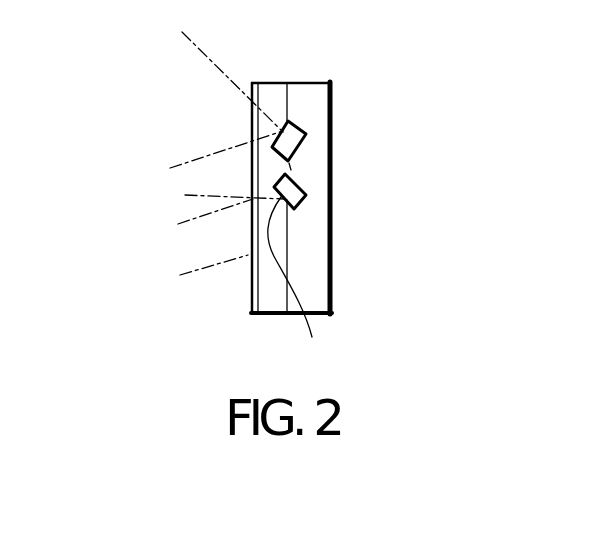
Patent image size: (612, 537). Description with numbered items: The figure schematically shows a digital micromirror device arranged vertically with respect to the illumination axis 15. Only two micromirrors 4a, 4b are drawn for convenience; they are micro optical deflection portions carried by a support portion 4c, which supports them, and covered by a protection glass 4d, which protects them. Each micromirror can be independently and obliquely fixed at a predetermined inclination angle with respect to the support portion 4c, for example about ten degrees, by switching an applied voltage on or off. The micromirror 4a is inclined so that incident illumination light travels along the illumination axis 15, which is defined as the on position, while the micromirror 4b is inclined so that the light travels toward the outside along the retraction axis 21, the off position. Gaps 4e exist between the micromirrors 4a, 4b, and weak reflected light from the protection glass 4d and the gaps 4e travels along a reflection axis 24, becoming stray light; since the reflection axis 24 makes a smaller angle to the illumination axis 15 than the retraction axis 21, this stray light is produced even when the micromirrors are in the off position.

The micromirror 4a is at (294, 271).
The micromirror 4b is at (287, 121).
The support portion 4c is at (332, 247).
The protection glass 4d is at (250, 293).
The gaps 4e is at (291, 166).
The illumination axis 15 is at (200, 202).
The retraction axis 21 is at (211, 59).
The reflection axis 24 is at (198, 264).